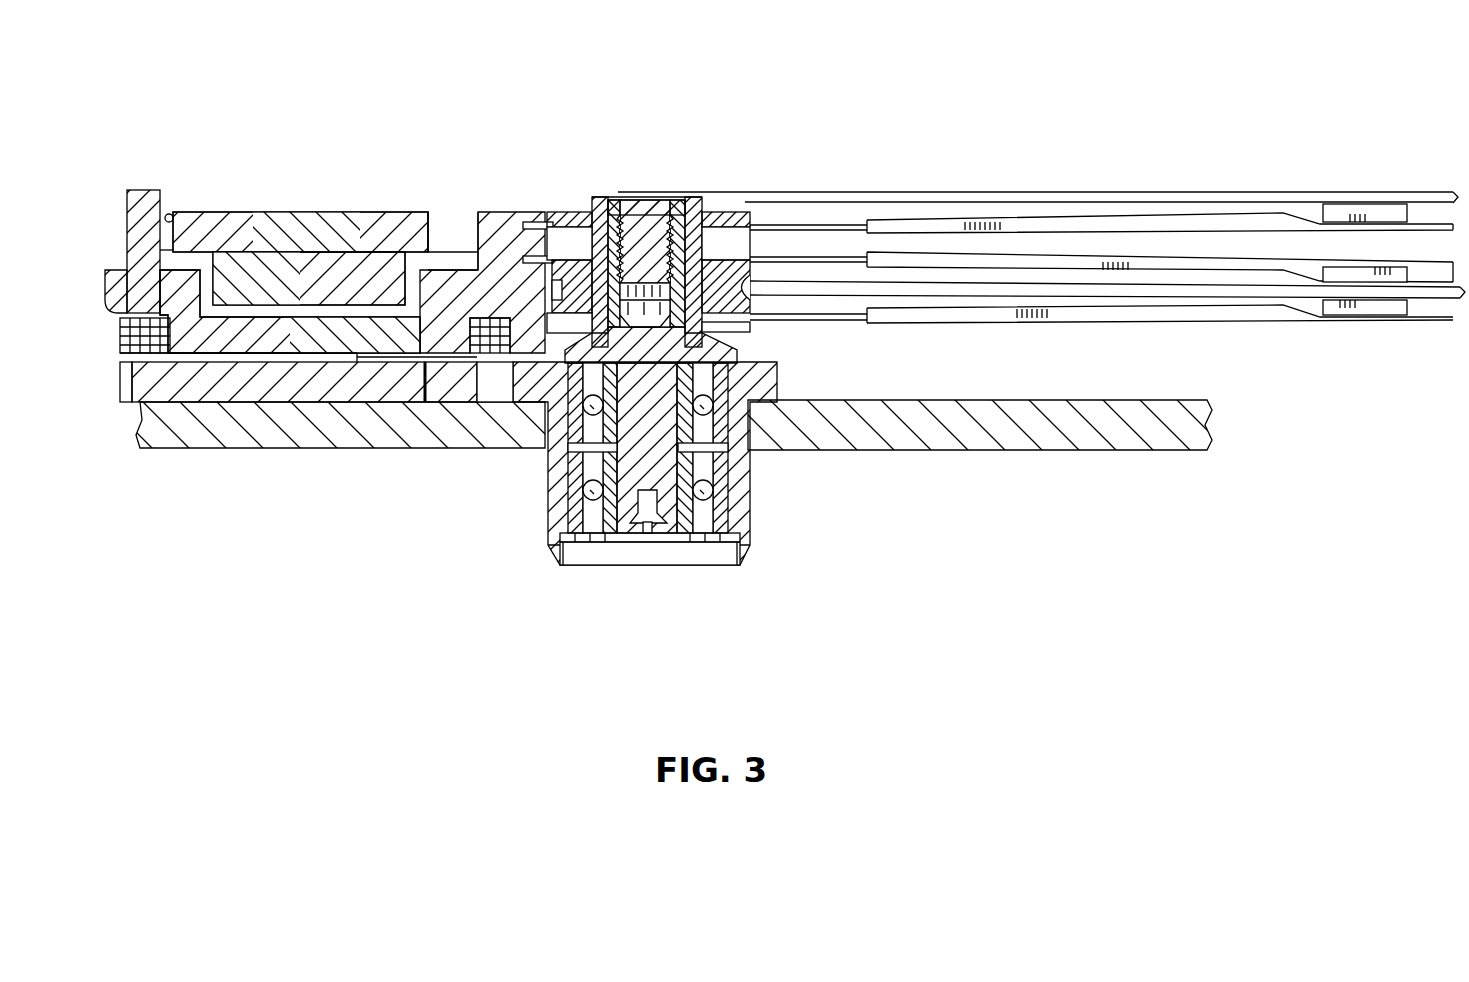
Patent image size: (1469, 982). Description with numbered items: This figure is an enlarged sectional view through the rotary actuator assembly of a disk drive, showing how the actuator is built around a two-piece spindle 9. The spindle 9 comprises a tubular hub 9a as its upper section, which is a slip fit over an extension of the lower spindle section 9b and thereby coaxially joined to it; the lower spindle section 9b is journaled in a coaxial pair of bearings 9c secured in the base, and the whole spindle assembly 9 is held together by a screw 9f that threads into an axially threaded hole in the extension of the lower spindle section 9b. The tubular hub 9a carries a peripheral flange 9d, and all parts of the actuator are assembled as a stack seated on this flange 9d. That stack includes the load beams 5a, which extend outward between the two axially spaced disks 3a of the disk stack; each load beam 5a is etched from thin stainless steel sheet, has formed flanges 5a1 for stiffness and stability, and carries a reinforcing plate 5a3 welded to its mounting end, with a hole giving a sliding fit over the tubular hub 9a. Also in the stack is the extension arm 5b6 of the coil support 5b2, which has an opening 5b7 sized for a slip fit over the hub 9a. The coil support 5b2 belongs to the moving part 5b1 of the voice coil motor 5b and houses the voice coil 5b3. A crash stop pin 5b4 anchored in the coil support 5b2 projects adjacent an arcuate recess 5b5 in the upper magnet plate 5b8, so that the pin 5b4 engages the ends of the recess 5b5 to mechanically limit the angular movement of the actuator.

The disk 3a is at (830, 280).
The load beam 5a is at (1095, 253).
The flanges 5a1 is at (1262, 217).
The reinforcing plate 5a3 is at (738, 236).
The voice coil motor 5b is at (387, 203).
The moving part 5b1 is at (293, 340).
The coil support 5b2 is at (200, 378).
The voice coil 5b3 is at (430, 363).
The pin 5b4 is at (143, 190).
The arcuate recess 5b5 is at (168, 212).
The extension arm 5b6 is at (497, 273).
The opening 5b7 is at (250, 212).
The upper magnet plate 5b8 is at (328, 250).
The spindle 9 is at (752, 352).
The tubular hub 9a is at (555, 218).
The lower spindle section 9b is at (668, 472).
The bearings 9c is at (592, 408).
The peripheral flange 9d is at (563, 352).
The screw 9f is at (648, 210).